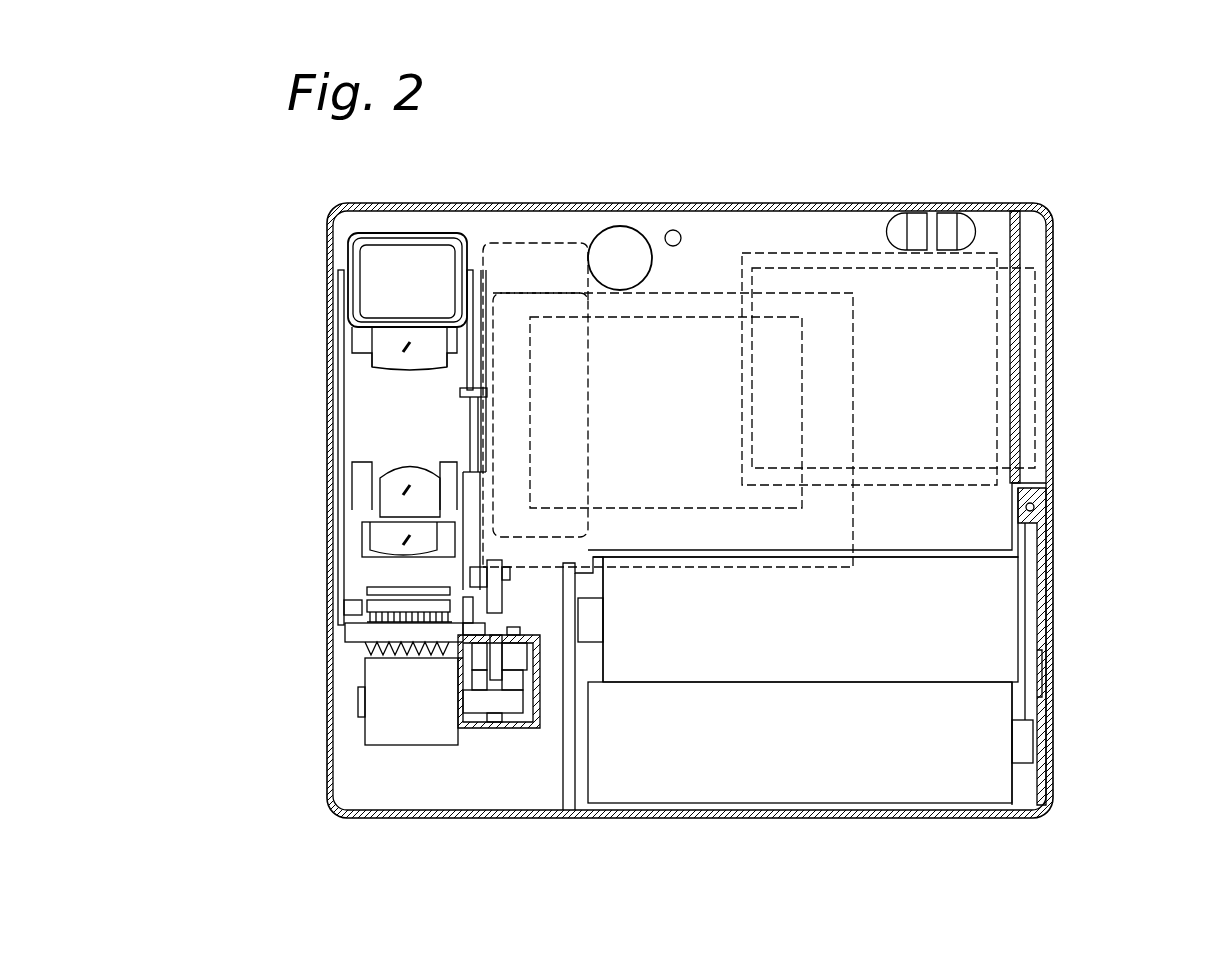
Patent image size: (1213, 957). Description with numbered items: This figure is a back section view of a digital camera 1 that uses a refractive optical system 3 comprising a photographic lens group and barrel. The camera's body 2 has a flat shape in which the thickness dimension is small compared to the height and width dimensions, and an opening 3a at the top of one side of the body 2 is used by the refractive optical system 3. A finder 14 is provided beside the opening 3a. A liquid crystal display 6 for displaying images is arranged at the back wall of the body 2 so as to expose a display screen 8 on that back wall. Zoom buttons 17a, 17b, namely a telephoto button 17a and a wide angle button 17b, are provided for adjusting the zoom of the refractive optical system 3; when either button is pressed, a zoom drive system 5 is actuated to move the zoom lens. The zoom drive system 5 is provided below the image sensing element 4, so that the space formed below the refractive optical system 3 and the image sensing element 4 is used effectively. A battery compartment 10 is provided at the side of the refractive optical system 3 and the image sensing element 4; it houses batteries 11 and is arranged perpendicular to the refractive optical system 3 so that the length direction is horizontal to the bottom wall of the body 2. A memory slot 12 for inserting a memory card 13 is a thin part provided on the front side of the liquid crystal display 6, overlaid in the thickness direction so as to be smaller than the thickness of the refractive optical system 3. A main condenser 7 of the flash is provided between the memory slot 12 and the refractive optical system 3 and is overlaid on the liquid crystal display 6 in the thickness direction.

The digital camera 1 is at (1058, 190).
The body 2 is at (626, 806).
The refractive optical system 3 is at (375, 423).
The opening 3a is at (380, 290).
The image sensing element 4 is at (380, 613).
The zoom drive system 5 is at (305, 633).
The liquid crystal display 6 is at (510, 318).
The main condenser 7 is at (533, 263).
The display screen 8 is at (688, 340).
The battery compartment 10 is at (569, 790).
The batteries 11 is at (806, 762).
The memory slot 12 is at (972, 423).
The memory card 13 is at (1030, 318).
The finder 14 is at (615, 252).
The telephoto button 17a is at (965, 212).
The wide angle button 17b is at (882, 212).